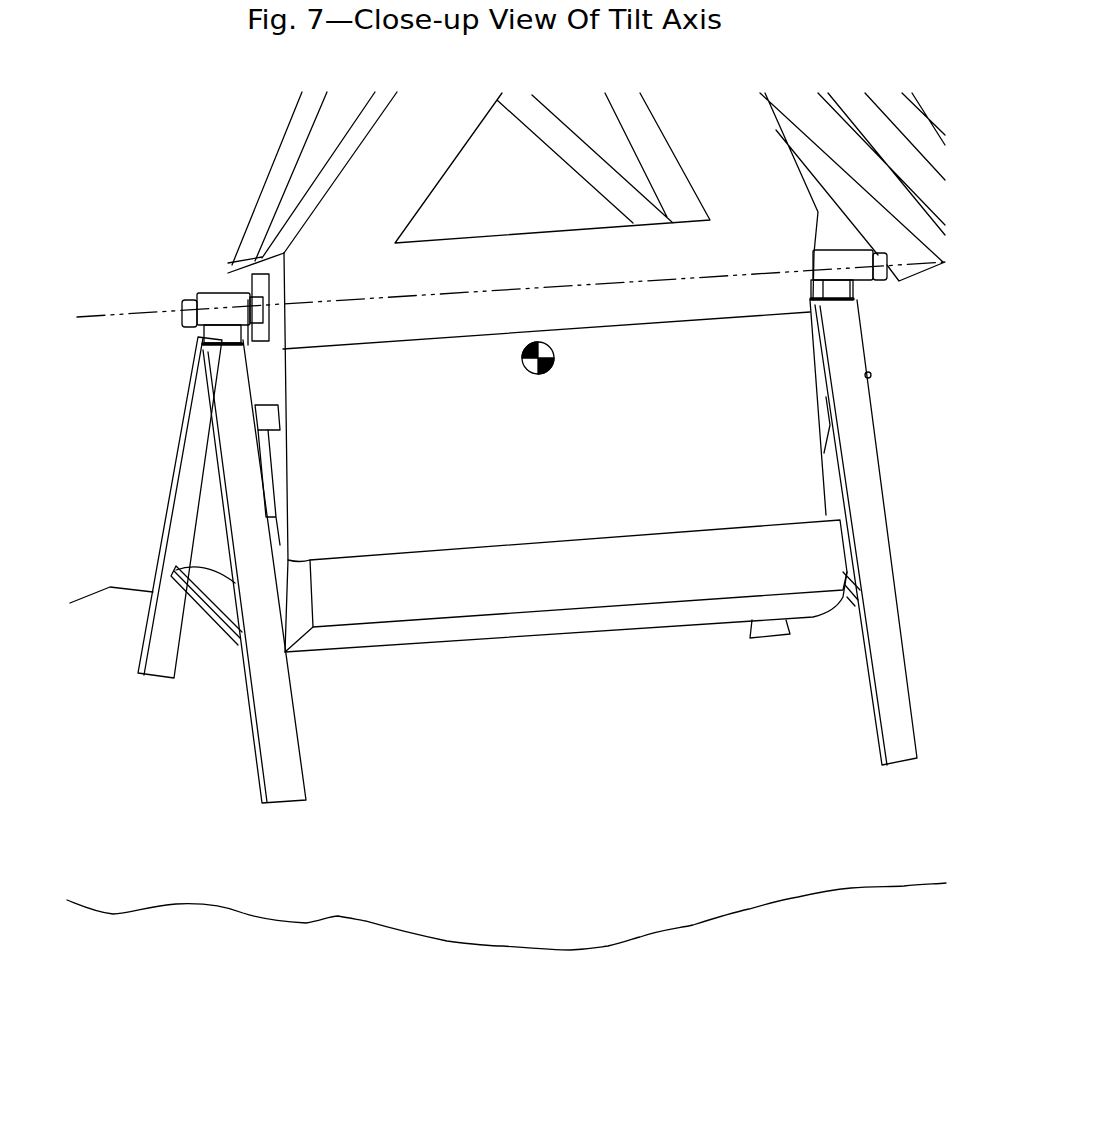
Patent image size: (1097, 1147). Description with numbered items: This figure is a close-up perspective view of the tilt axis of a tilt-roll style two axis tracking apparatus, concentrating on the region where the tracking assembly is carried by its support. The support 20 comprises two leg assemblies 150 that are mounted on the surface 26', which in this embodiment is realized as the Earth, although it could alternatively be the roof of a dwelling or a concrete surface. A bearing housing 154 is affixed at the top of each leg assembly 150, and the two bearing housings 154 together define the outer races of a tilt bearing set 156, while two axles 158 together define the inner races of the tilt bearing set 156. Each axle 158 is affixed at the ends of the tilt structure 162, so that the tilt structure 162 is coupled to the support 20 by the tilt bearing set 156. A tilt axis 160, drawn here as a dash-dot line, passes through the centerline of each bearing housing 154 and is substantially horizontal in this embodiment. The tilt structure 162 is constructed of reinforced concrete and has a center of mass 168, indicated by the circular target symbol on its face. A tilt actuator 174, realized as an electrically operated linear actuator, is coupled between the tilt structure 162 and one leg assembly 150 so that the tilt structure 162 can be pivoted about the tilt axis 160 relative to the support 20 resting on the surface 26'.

The support 20 is at (152, 502).
The leg assembly 150 is at (160, 575).
The bearing housing 154 is at (220, 293).
The tilt bearing set 156 is at (190, 278).
The axle 158 is at (183, 330).
The tilt axis 160 is at (622, 284).
The tilt structure 162 is at (493, 597).
The center of mass 168 is at (553, 382).
The tilt actuator 174 is at (266, 418).
The surface 26' is at (506, 774).